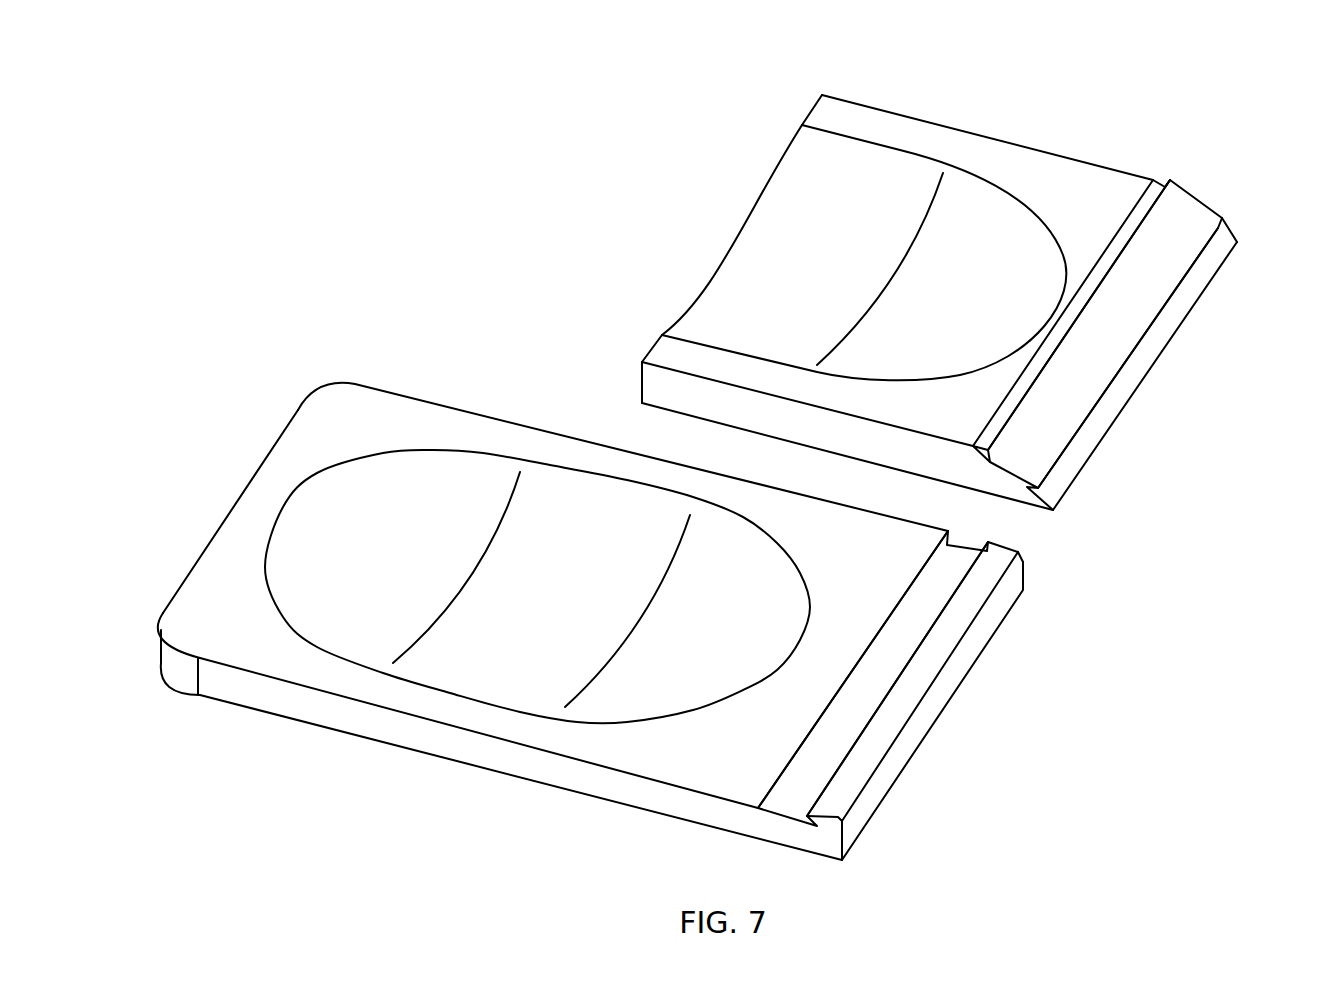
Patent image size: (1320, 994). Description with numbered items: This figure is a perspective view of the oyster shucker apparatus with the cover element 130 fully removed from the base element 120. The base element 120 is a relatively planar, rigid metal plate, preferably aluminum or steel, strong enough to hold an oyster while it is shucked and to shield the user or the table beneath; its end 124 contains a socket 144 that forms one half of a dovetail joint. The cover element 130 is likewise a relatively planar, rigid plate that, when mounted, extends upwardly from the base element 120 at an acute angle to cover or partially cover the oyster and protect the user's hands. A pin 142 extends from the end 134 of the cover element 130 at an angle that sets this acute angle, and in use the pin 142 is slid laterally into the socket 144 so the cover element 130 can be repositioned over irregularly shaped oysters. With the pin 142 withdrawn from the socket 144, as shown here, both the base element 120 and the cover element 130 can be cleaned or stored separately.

The base element 120 is at (340, 423).
The end of the base element 124 is at (870, 748).
The socket 144 is at (916, 618).
The cover element 130 is at (893, 132).
The end of the cover element 134 is at (1188, 215).
The pin 142 is at (1050, 380).